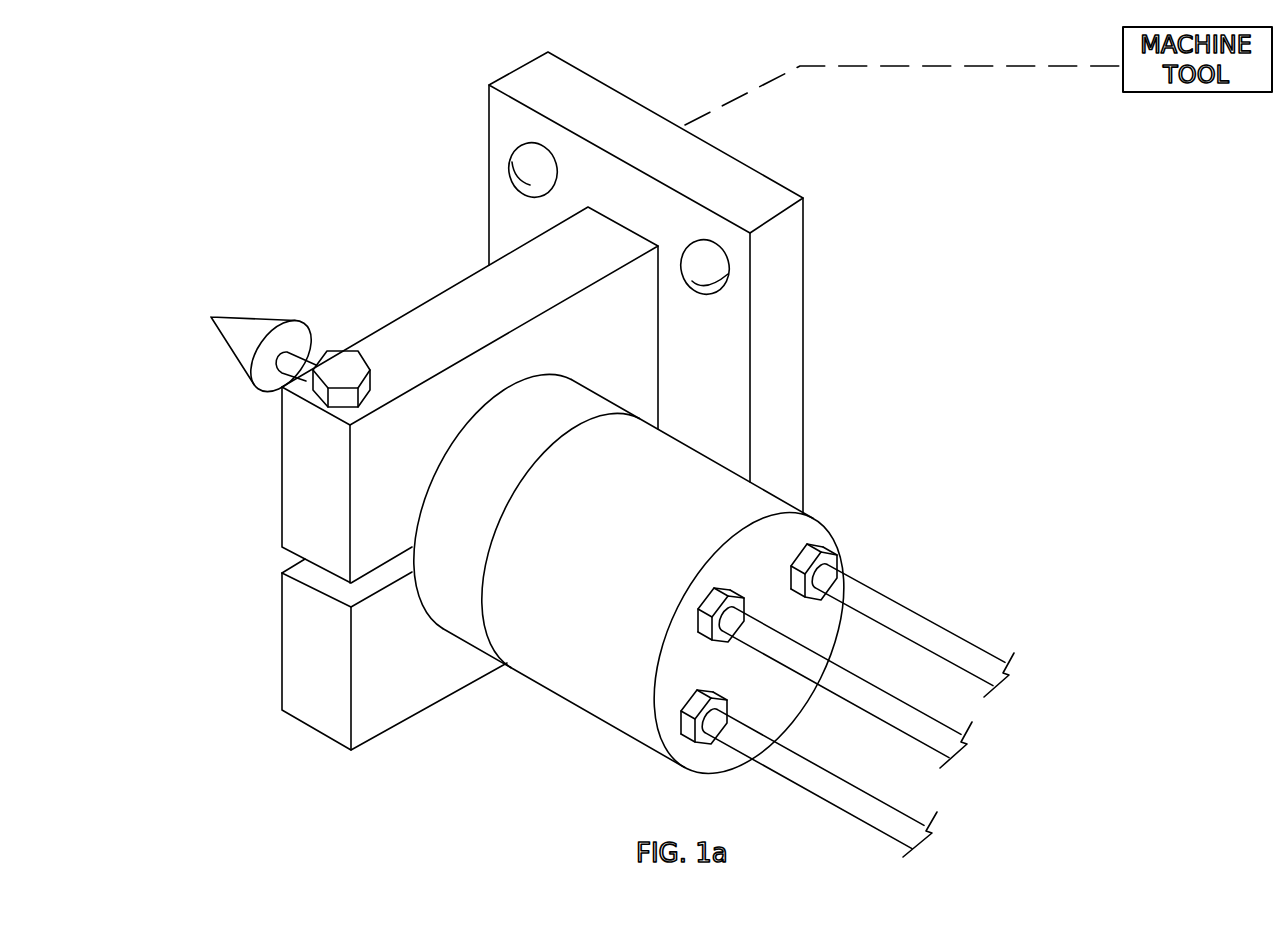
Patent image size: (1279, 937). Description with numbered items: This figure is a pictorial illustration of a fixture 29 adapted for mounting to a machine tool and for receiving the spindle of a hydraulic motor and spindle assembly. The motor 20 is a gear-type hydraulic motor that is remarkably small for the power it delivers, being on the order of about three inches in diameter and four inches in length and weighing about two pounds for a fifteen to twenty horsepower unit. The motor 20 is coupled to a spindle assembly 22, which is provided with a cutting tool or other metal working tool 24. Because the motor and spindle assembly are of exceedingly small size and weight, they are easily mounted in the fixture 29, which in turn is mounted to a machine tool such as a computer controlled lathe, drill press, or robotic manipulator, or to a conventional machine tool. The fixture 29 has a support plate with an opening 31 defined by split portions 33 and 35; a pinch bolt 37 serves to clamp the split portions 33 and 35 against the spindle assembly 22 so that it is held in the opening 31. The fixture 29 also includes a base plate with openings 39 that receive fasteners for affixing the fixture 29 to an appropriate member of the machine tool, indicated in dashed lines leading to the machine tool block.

The motor 20 is at (588, 643).
The spindle assembly 22 is at (455, 600).
The cutting tool 24 is at (232, 350).
The fixture 29 is at (878, 319).
The opening 31 is at (457, 433).
The split portion 33 is at (302, 478).
The split portion 35 is at (320, 650).
The pinch bolt 37 is at (344, 372).
The openings 39 is at (525, 180).